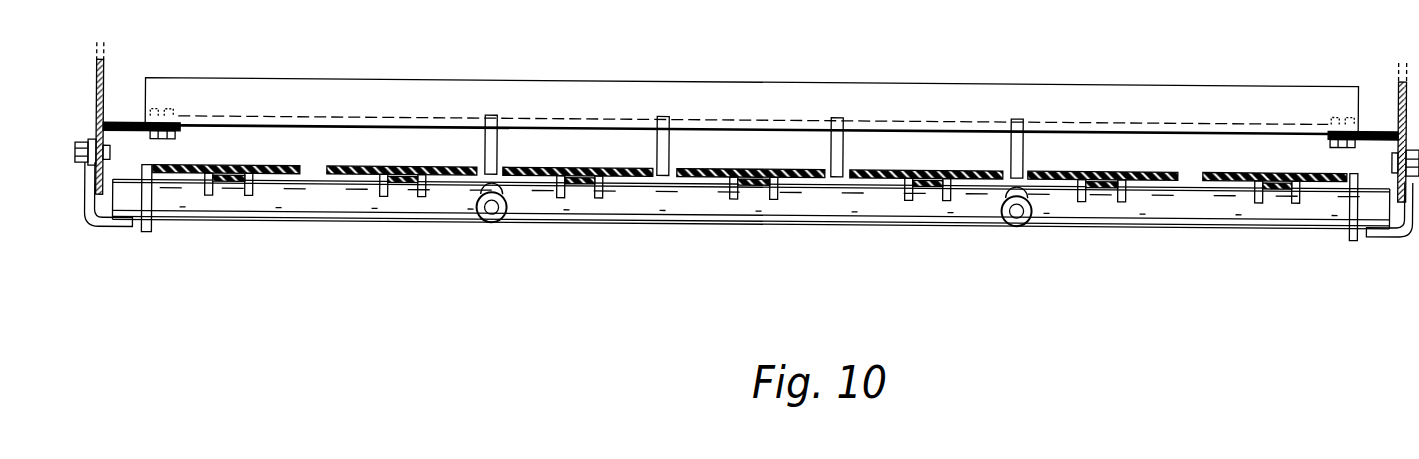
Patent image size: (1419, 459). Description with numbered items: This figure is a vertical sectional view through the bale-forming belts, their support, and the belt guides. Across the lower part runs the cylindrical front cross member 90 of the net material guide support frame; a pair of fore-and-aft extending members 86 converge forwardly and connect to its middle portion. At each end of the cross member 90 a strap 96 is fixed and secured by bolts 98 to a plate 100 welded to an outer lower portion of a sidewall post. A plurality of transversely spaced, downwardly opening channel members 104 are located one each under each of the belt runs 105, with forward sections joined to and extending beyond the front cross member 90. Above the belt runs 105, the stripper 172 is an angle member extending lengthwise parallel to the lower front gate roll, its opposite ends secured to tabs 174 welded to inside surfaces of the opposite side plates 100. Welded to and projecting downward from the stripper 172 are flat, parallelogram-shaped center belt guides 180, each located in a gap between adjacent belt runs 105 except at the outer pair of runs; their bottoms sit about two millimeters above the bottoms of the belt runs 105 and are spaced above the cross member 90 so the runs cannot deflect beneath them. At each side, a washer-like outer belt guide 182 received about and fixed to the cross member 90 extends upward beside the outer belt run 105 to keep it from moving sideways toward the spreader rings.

The fore-and-aft extending member 86 is at (510, 208).
The front cross member 90 is at (570, 227).
The strap 96 is at (103, 228).
The bolt 98 is at (112, 154).
The plate 100 is at (110, 78).
The channel member 104 is at (375, 193).
The belt run 105 is at (355, 162).
The stripper 172 is at (747, 82).
The tab 174 is at (128, 123).
The center belt guide 180 is at (658, 152).
The outer belt guide 182 is at (147, 234).